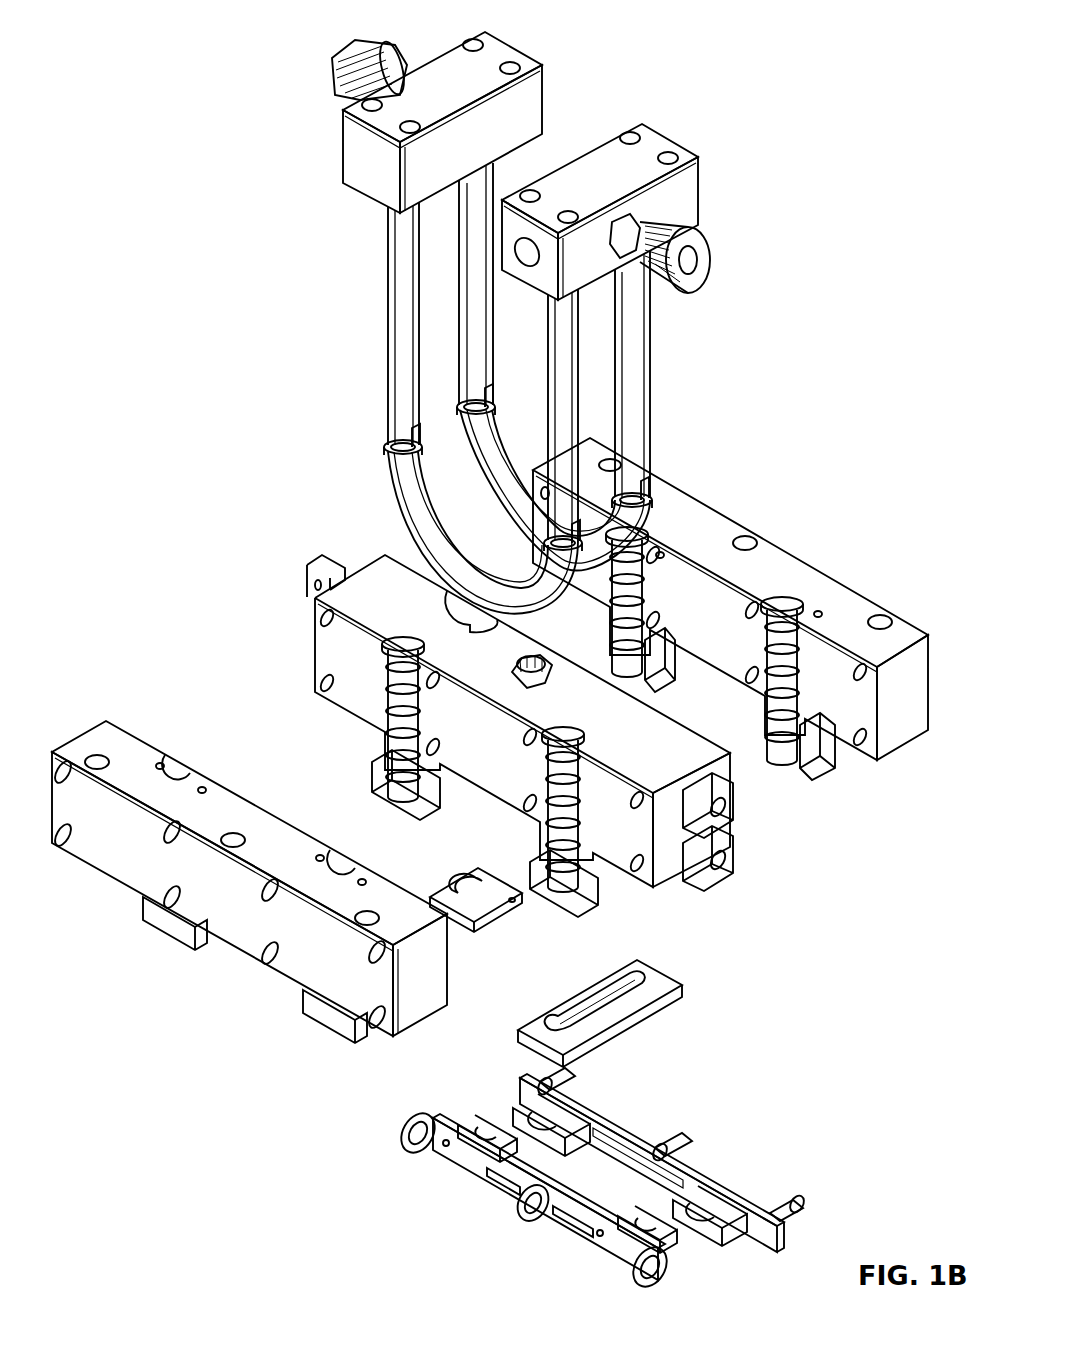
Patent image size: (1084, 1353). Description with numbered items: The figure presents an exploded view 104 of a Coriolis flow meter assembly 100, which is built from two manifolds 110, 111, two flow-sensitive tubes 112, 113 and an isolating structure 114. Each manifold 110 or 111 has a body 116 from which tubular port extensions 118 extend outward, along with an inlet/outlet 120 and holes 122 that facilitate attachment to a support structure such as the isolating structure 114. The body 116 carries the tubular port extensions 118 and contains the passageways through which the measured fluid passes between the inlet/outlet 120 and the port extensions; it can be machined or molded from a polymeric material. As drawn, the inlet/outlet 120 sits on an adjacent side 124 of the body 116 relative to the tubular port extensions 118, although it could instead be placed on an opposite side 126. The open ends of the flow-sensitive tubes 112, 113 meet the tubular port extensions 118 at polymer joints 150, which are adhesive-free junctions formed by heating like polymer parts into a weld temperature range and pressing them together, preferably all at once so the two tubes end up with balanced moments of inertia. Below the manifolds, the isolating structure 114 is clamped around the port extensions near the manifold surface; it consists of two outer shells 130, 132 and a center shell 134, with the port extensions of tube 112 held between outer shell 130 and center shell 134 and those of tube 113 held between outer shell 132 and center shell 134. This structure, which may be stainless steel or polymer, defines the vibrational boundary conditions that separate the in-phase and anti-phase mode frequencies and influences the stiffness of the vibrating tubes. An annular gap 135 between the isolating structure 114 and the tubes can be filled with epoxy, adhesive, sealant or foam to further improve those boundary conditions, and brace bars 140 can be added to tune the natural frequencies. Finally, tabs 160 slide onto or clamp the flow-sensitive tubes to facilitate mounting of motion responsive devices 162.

The Coriolis flow meter assembly 100 is at (130, 52).
The exploded view 104 is at (182, 1205).
The manifold 110 is at (367, 170).
The manifold 111 is at (642, 124).
The flow-sensitive tube 112 is at (395, 487).
The flow-sensitive tube 113 is at (480, 452).
The isolating structure 114 is at (142, 1005).
The body 116 is at (520, 115).
The tubular port extension 118 is at (390, 285).
The inlet/outlet 120 is at (335, 86).
The hole 122 is at (470, 42).
The adjacent side 124 is at (497, 47).
The opposite side 126 is at (340, 145).
The outer shell 130 is at (82, 738).
The outer shell 132 is at (903, 720).
The center shell 134 is at (683, 757).
The annular gap 135 is at (795, 600).
The brace bar 140 is at (640, 1018).
The polymer joint 150 is at (388, 450).
The tab 160 is at (462, 1118).
The motion responsive device 162 is at (793, 1205).